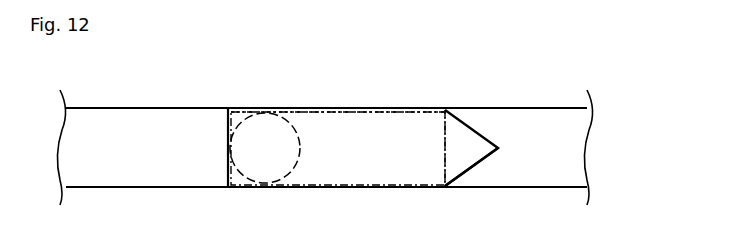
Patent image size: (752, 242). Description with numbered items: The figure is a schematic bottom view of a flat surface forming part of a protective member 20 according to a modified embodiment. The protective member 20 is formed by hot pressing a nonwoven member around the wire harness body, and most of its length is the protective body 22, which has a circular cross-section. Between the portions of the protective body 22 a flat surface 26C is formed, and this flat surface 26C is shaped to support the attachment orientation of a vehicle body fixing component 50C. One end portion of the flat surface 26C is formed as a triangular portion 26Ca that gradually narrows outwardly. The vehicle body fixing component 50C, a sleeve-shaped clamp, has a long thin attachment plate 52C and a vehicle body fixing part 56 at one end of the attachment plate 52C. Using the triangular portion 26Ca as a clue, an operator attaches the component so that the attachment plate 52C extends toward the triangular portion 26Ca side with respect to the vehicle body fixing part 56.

The protective member 20 is at (506, 108).
The protective body 22 is at (135, 118).
The flat surface 26C is at (358, 172).
The triangular portion 26Ca is at (479, 165).
The vehicle body fixing component 50C is at (395, 108).
The attachment plate 52C is at (333, 108).
The vehicle body fixing part 56 is at (292, 168).